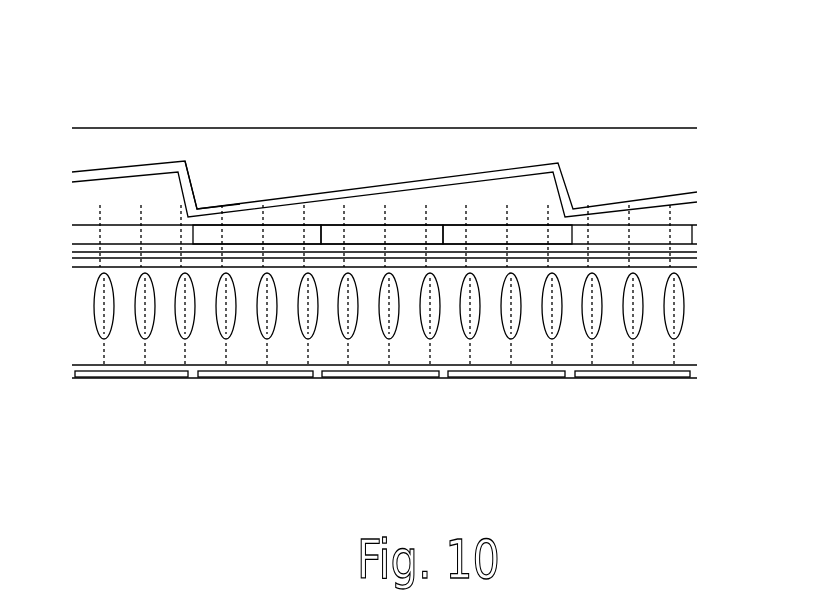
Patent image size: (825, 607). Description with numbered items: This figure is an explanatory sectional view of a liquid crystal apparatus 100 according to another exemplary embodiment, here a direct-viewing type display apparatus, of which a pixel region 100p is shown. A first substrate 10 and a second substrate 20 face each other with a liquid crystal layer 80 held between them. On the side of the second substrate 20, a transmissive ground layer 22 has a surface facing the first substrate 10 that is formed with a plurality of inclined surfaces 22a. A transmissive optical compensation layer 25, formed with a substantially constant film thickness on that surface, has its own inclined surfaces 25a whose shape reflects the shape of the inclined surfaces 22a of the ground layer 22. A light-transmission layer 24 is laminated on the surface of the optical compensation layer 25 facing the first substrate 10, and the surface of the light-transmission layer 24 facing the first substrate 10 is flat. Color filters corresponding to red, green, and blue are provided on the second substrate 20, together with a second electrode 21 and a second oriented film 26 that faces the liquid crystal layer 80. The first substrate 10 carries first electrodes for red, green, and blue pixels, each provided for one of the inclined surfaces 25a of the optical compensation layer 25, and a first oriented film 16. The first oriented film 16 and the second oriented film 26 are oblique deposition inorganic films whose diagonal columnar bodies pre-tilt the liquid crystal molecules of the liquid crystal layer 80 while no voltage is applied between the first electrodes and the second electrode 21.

The liquid crystal apparatus 100 is at (414, 253).
The pixel region of liquid crystal device 100p is at (402, 255).
The second substrate 20 is at (423, 151).
The ground layer 22 is at (384, 131).
The inclined surfaces 22a is at (263, 202).
The optical compensation layer 25 is at (384, 139).
The inclined surfaces 25a is at (237, 208).
The light-transmission layer 24 is at (445, 197).
The second electrode 21 is at (525, 255).
The second oriented film 26 is at (572, 263).
The liquid crystal layer 80 is at (71, 270).
The first substrate 10 is at (425, 420).
The first oriented film 16 is at (483, 368).